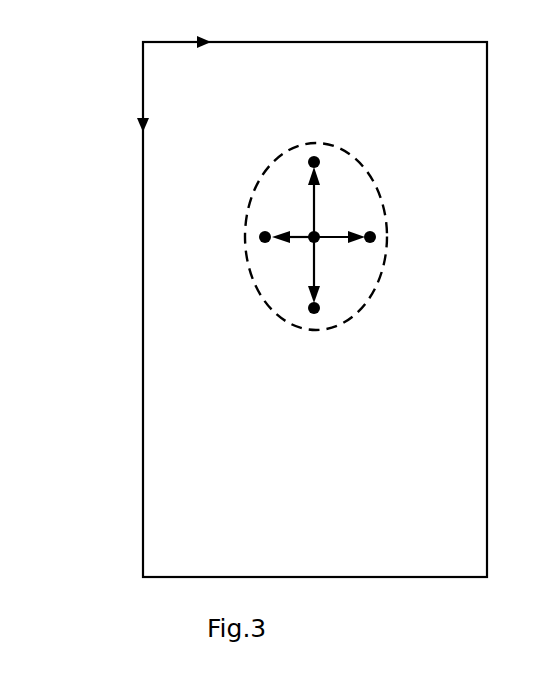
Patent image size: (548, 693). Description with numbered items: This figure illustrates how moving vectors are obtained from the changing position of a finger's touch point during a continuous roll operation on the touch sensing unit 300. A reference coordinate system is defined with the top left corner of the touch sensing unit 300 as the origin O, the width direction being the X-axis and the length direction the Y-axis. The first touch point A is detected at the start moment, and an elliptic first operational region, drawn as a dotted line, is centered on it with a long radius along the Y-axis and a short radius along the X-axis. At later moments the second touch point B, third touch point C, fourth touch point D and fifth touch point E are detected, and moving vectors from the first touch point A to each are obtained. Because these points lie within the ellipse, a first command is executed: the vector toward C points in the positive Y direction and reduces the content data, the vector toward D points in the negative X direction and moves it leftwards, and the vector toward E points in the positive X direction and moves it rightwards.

The touch sensing unit 300 is at (76, 138).
The origin of the coordinate system O is at (178, 88).
The first touch point A is at (318, 235).
The second touch point B is at (325, 168).
The third touch point C is at (327, 309).
The fourth touch point D is at (265, 221).
The fifth touch point E is at (371, 221).